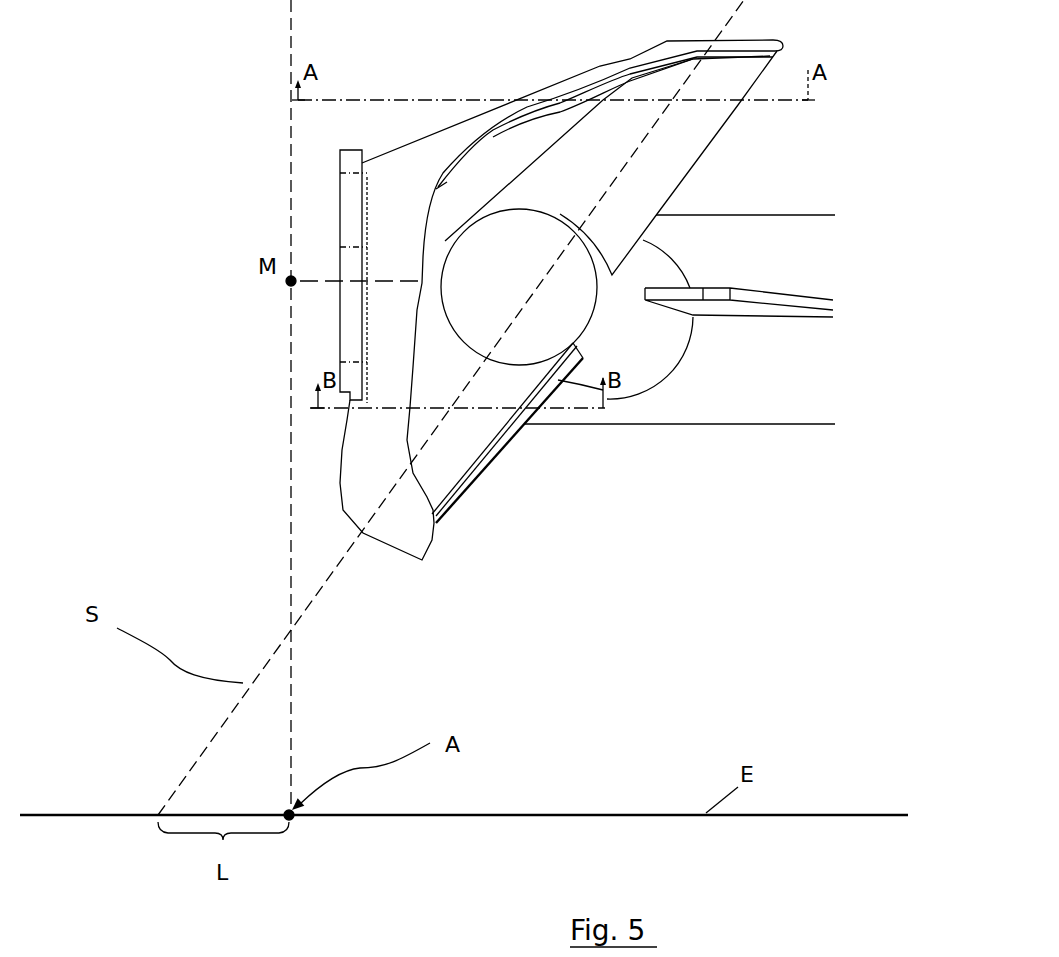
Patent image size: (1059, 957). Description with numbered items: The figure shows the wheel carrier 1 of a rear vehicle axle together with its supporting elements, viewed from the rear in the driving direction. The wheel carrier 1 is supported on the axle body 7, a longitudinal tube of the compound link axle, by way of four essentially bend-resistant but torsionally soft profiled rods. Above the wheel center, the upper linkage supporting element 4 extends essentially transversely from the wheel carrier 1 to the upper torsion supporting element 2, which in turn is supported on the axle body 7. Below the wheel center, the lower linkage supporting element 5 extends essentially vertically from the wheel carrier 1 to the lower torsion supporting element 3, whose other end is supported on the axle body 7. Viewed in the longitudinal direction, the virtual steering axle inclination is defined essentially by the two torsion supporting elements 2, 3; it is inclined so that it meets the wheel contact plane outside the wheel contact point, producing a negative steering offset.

The wheel carrier 1 is at (401, 225).
The upper torsion supporting element 2 is at (675, 147).
The lower torsion supporting element 3 is at (467, 443).
The upper linkage supporting element 4 is at (630, 57).
The lower linkage supporting element 5 is at (368, 487).
The axle body 7 is at (643, 333).